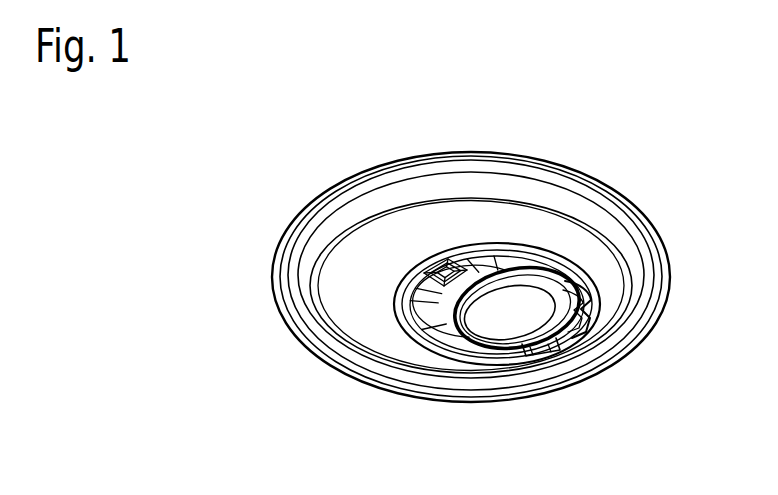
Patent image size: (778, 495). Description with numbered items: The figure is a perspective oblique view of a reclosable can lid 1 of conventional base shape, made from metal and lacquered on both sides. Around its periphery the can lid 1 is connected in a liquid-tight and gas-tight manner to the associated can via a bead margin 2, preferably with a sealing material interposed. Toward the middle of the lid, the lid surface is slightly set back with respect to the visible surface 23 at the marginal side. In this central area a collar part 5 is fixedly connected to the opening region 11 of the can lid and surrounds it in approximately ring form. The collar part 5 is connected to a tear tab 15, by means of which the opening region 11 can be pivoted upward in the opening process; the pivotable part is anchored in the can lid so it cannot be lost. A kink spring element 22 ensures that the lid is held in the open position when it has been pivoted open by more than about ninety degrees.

The can lid 1 is at (474, 289).
The bead margin 2 is at (288, 287).
The collar part 5 is at (525, 348).
The opening region 11 is at (523, 307).
The tear tab 15 is at (588, 309).
The kink spring element 22 is at (432, 261).
The visible surface 23 is at (397, 352).